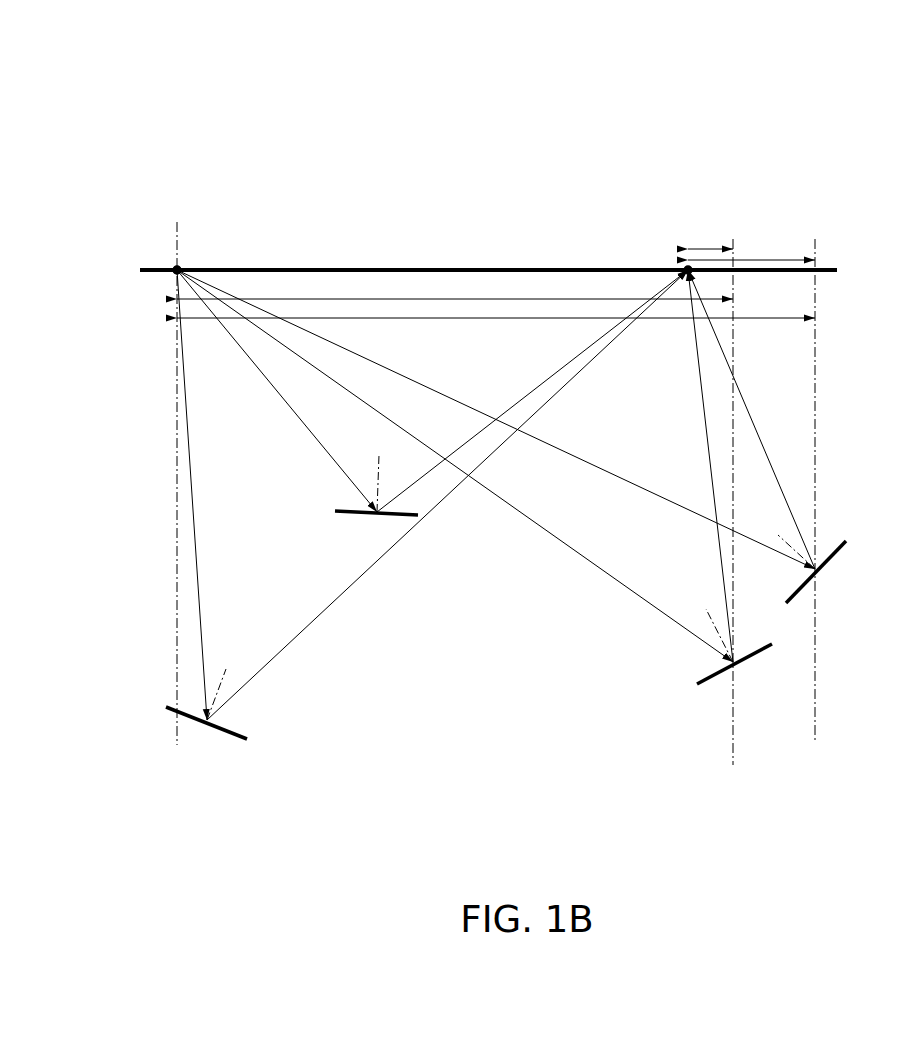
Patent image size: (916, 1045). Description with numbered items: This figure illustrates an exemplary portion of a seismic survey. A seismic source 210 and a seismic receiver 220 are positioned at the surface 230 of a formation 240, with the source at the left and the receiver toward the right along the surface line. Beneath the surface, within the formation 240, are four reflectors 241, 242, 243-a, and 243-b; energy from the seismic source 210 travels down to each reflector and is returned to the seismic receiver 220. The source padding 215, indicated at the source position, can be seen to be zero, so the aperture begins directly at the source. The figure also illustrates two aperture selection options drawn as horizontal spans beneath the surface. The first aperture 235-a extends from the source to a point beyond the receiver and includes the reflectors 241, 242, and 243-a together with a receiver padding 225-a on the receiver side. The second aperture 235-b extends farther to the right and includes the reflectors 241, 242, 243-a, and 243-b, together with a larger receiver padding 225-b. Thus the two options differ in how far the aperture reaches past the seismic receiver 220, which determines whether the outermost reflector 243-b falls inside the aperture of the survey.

The seismic source 210 is at (174, 267).
The source padding 215 is at (182, 262).
The seismic receiver 220 is at (682, 263).
The receiver padding 225-a is at (705, 245).
The receiver padding 225-b is at (775, 256).
The surface 230 is at (486, 266).
The aperture 235-a is at (428, 296).
The aperture 235-b is at (352, 315).
The formation 240 is at (493, 362).
The reflector 241 is at (414, 520).
The reflector 242 is at (229, 743).
The reflector 243-a is at (712, 683).
The reflector 243-b is at (803, 600).